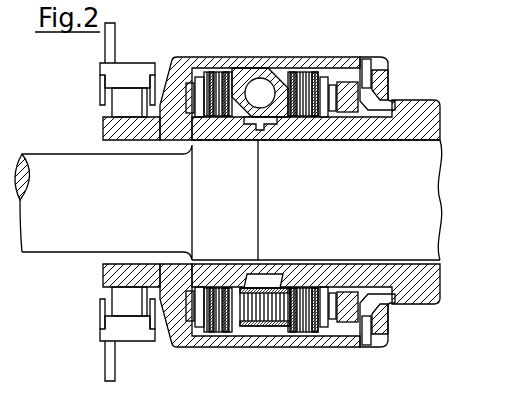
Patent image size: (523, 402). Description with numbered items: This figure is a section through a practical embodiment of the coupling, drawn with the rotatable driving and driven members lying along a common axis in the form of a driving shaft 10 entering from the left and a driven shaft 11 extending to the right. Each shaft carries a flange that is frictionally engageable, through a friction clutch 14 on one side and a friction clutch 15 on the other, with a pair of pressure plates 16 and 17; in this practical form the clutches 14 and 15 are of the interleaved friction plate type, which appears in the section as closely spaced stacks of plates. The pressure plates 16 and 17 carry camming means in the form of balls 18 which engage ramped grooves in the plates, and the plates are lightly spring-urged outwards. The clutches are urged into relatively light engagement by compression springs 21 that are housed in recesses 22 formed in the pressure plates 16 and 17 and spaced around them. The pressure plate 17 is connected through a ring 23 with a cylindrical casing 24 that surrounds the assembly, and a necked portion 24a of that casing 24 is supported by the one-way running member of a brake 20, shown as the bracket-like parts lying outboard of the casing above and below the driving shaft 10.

The driving shaft 10 is at (65, 228).
The driven shaft 11 is at (417, 210).
The friction clutch 14 is at (210, 77).
The friction clutch 15 is at (320, 70).
The pressure plate 16 is at (237, 72).
The pressure plate 17 is at (277, 77).
The balls 18 is at (263, 85).
The brake 20 is at (123, 108).
The compression springs 21 is at (255, 326).
The recesses 22 is at (272, 272).
The ring 23 is at (380, 56).
The cylindrical casing 24 is at (303, 67).
The necked portion 24a is at (103, 130).